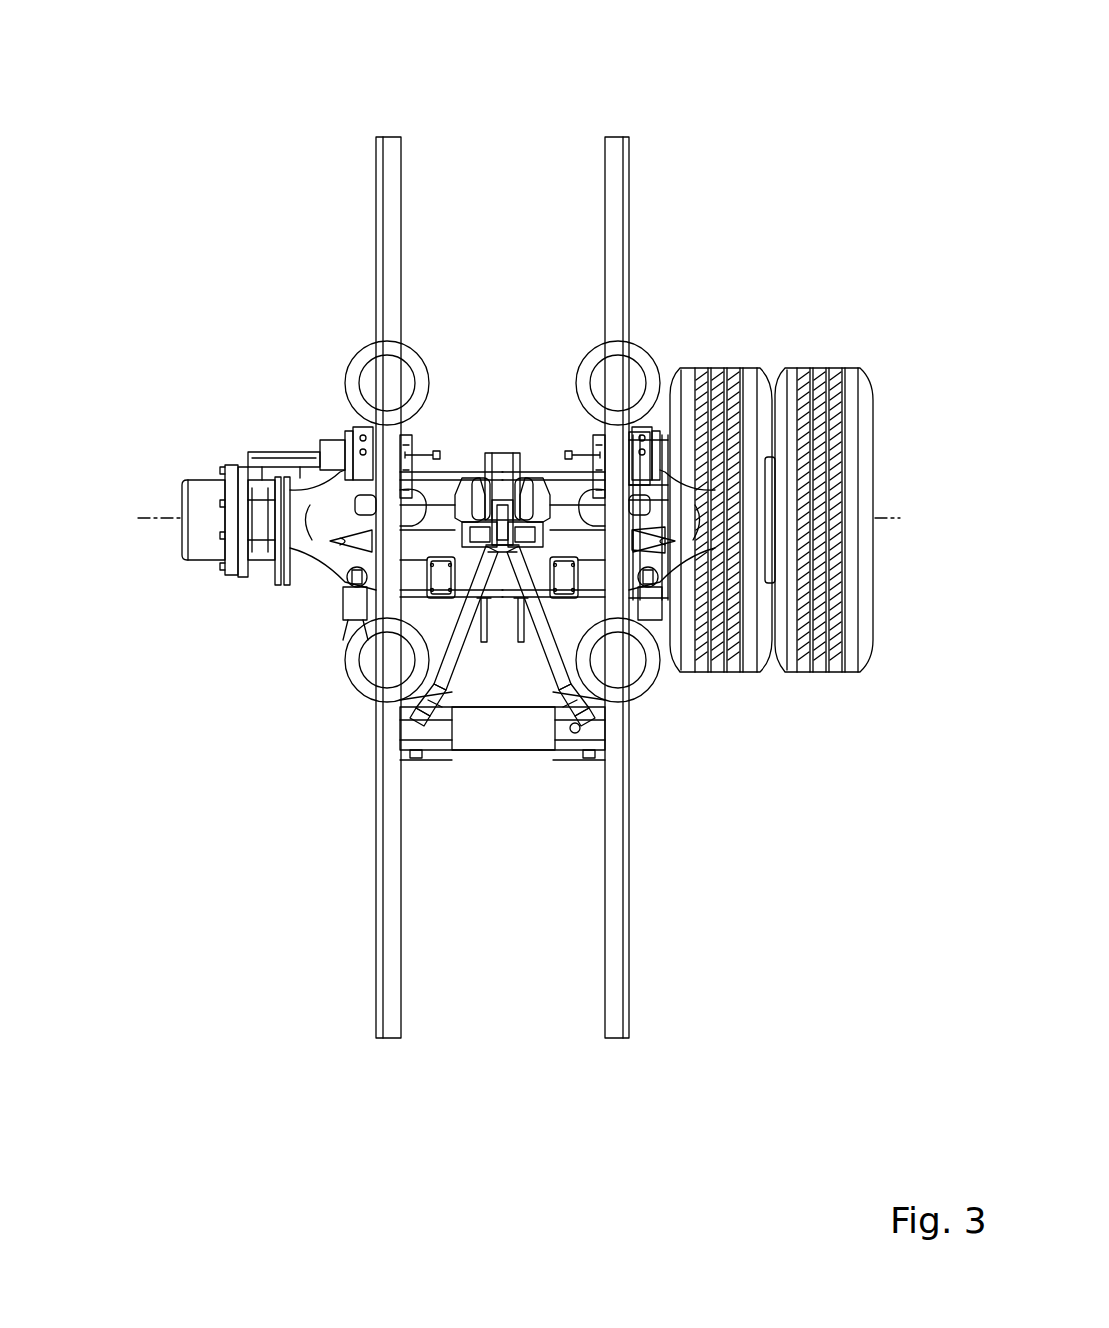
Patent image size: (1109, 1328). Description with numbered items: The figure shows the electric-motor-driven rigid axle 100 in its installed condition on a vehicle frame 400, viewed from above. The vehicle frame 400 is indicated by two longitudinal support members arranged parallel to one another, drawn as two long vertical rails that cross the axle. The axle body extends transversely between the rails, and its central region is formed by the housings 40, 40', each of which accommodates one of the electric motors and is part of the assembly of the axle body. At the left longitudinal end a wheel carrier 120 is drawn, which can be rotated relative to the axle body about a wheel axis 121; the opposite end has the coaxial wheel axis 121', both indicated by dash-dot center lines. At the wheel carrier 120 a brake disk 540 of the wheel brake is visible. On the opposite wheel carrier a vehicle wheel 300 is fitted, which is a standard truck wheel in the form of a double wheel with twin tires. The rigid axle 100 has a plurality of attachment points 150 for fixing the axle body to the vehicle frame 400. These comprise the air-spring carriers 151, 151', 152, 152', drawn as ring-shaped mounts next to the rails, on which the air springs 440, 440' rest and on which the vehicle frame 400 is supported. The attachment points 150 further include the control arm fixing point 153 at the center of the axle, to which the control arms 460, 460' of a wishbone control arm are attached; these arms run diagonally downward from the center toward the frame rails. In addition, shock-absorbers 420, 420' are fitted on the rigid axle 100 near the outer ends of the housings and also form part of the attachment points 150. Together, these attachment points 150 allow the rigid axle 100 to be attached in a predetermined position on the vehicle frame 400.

The vehicle frame 400 is at (390, 197).
The housing 40 is at (396, 383).
The housing 40' is at (608, 383).
The attachment points 150 is at (491, 279).
The control arm fixing point 153 is at (502, 526).
The air-spring carrier 151 is at (247, 366).
The air-spring carrier 151' is at (781, 367).
The air-spring carrier 152 is at (247, 709).
The air-spring carrier 152' is at (781, 709).
The air spring 440 is at (240, 555).
The air spring 440' is at (788, 553).
The control arm 460 is at (454, 863).
The control arm 460' is at (550, 863).
The rigid axle 100 is at (296, 440).
The wheel carrier 120 is at (194, 468).
The wheel axis 121 is at (124, 499).
The wheel axis 121' is at (932, 499).
The brake disk 540 is at (256, 591).
The shock-absorber 420 is at (217, 628).
The shock-absorber 420' is at (808, 531).
The vehicle wheel 300 is at (745, 663).